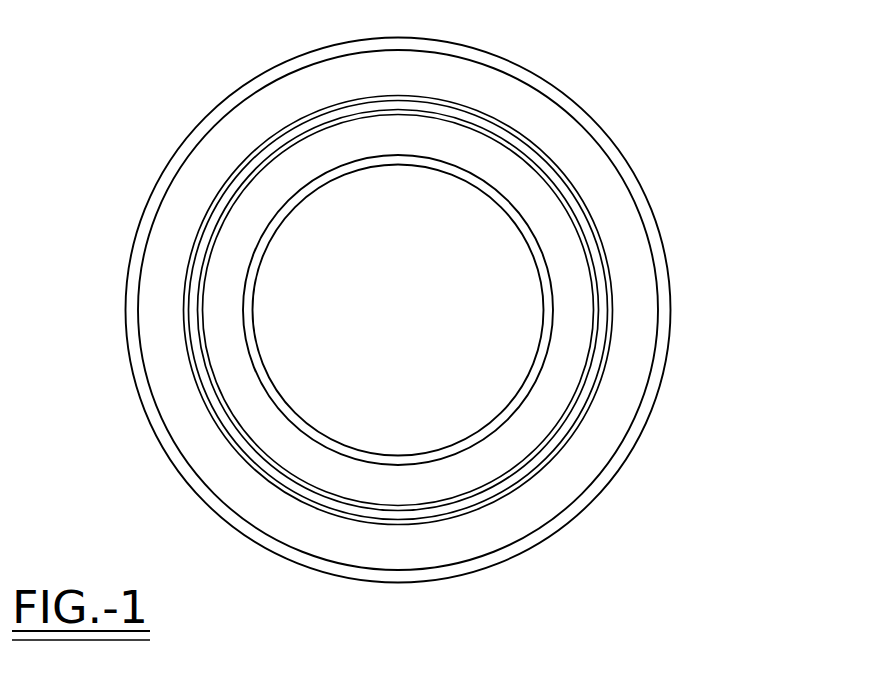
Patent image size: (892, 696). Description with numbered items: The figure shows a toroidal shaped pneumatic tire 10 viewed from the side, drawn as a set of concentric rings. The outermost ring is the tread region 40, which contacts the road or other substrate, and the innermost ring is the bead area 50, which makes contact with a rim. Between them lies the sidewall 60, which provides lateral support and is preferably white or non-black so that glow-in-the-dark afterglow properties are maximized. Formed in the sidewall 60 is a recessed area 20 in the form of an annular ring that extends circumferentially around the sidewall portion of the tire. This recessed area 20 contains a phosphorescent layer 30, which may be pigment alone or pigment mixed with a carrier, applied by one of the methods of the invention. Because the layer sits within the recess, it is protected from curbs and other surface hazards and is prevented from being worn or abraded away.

The pneumatic tire 10 is at (468, 308).
The recessed area 20 is at (620, 287).
The phosphorescent layer 30 is at (602, 338).
The tread region 40 is at (541, 67).
The bead area 50 is at (538, 363).
The sidewall 60 is at (608, 426).